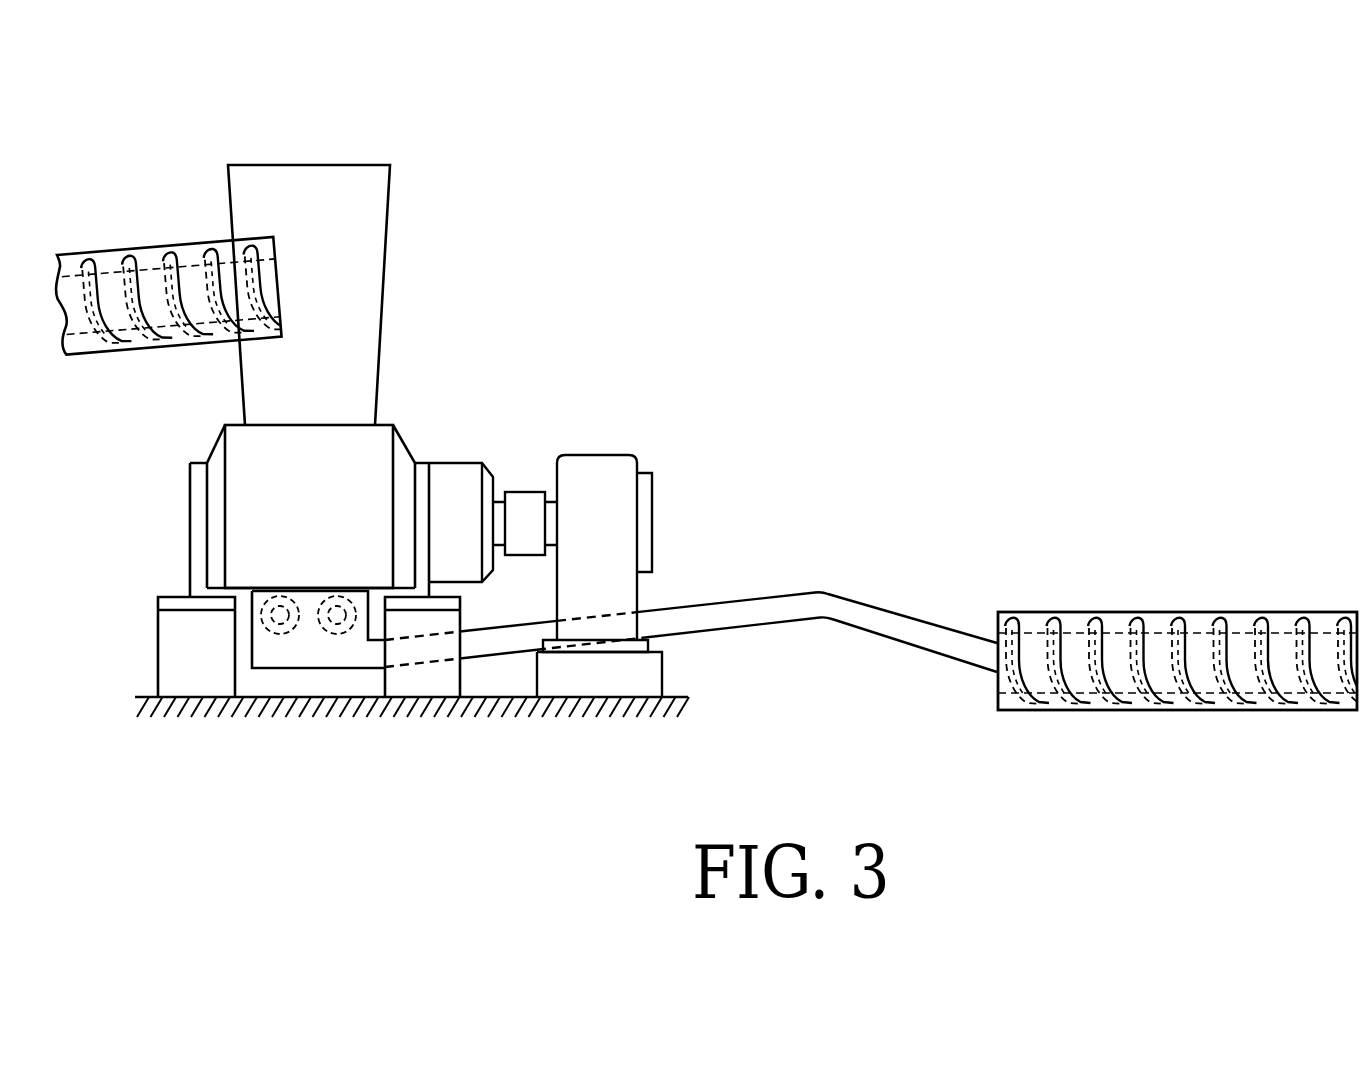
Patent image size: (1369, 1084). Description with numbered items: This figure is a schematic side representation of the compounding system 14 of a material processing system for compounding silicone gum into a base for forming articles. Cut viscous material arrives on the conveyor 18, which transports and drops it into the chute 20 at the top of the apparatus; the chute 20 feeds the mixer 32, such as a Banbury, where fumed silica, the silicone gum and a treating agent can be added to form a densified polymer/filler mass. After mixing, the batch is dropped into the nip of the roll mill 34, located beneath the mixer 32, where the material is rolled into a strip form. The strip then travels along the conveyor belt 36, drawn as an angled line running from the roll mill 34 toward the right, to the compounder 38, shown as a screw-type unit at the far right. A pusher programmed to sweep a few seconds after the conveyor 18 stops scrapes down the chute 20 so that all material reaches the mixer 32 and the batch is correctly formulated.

The compounding system 14 is at (662, 318).
The conveyor 18 is at (112, 247).
The chute 20 is at (392, 200).
The mixer 32 is at (235, 445).
The roll mill 34 is at (288, 658).
The conveyor belt 36 is at (765, 610).
The compounder 38 is at (1167, 612).